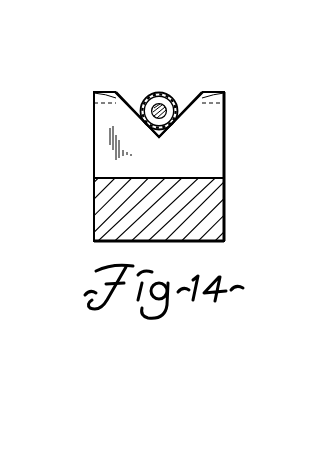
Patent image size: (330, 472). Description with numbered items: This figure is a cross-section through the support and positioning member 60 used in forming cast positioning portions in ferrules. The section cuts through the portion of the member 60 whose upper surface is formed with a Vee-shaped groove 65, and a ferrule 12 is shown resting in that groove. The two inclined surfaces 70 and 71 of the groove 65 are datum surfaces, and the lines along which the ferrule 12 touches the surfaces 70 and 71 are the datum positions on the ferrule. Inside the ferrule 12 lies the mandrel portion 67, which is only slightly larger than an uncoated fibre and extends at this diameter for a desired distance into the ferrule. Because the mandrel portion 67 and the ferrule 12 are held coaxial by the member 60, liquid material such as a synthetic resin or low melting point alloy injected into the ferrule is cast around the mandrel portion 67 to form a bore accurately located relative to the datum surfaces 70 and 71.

The ferrule 12 is at (148, 95).
The support and positioning member 60 is at (212, 206).
The Vee-shaped groove 65 is at (183, 103).
The mandrel portion 67 is at (163, 106).
The inclined surface 70 is at (94, 102).
The inclined surface 71 is at (227, 100).